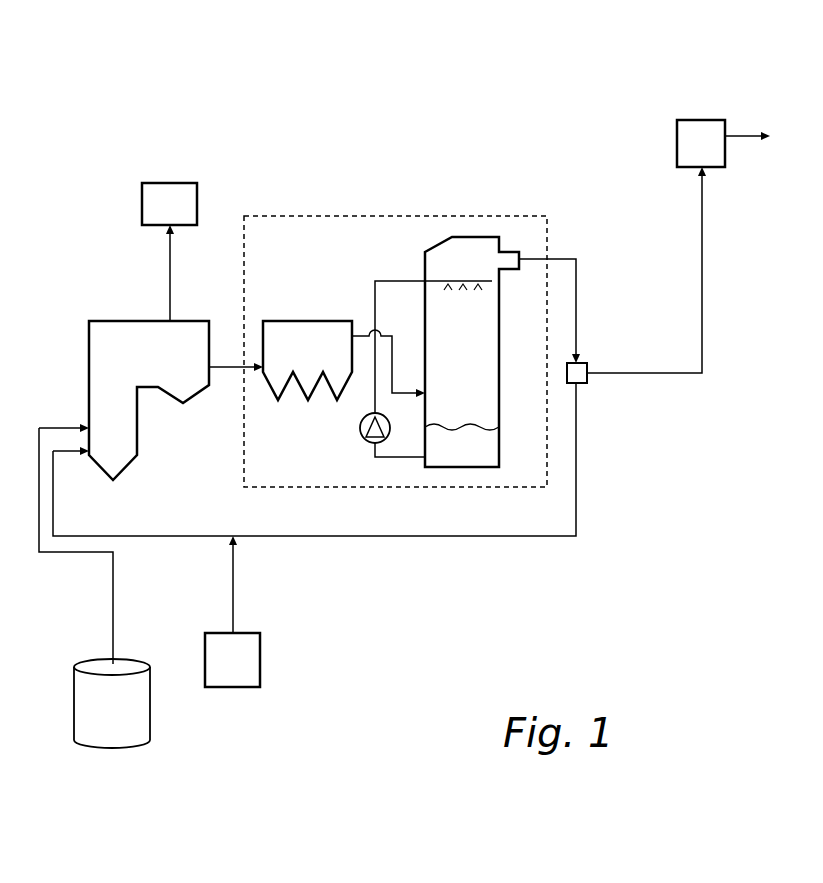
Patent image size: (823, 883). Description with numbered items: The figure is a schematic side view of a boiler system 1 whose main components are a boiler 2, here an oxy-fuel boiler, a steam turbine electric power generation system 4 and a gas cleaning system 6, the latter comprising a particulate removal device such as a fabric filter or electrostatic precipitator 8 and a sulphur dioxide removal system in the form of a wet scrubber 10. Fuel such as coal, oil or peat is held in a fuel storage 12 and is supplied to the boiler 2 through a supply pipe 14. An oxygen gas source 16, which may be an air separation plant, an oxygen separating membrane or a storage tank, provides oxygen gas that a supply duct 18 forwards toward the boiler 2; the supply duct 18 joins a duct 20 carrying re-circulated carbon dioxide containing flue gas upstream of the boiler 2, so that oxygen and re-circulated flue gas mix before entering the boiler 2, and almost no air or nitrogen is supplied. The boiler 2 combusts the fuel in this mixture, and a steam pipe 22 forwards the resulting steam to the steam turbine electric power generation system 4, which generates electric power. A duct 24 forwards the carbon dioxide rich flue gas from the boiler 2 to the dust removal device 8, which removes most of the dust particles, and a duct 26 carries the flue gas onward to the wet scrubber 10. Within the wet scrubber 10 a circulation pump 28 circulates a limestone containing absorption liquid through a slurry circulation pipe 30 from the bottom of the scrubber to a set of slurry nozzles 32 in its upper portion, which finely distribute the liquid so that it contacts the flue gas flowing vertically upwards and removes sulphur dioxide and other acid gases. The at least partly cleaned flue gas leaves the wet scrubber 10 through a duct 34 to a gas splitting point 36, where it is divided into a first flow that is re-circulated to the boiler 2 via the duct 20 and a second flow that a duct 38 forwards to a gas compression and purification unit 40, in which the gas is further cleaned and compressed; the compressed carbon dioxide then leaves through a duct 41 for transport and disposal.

The boiler system 1 is at (104, 76).
The boiler 2 is at (100, 387).
The steam turbine electric power generation system 4 is at (142, 207).
The gas cleaning system 6 is at (406, 207).
The particulate removal device 8 is at (285, 320).
The wet scrubber 10 is at (487, 237).
The fuel storage 12 is at (140, 713).
The supply pipe 14 is at (113, 570).
The oxygen gas source 16 is at (250, 660).
The supply duct 18 is at (234, 585).
The duct 20 is at (340, 538).
The steam pipe 22 is at (170, 283).
The duct 24 is at (218, 369).
The duct 26 is at (363, 335).
The circulation pump 28 is at (358, 430).
The slurry circulation pipe 30 is at (397, 280).
The slurry nozzles 32 is at (480, 285).
The duct 34 is at (577, 290).
The gas splitting point 36 is at (581, 385).
The duct 38 is at (703, 232).
The gas compression and purification unit 40 is at (676, 128).
The duct 41 is at (744, 133).